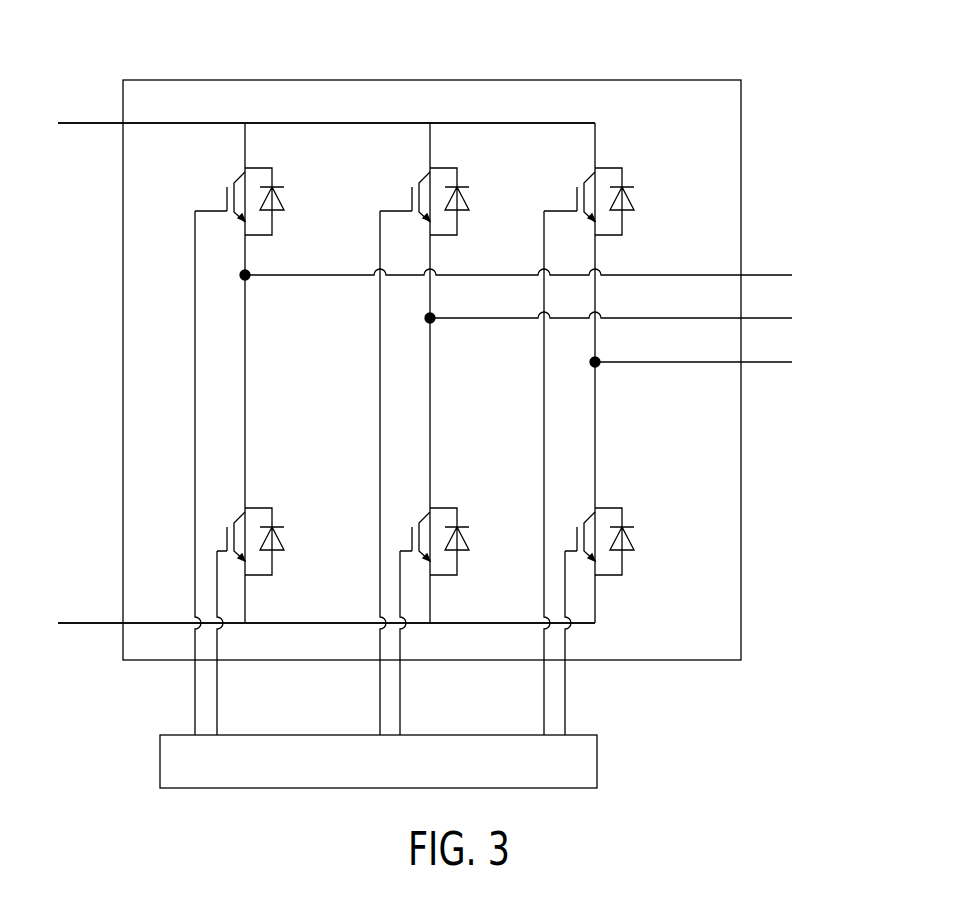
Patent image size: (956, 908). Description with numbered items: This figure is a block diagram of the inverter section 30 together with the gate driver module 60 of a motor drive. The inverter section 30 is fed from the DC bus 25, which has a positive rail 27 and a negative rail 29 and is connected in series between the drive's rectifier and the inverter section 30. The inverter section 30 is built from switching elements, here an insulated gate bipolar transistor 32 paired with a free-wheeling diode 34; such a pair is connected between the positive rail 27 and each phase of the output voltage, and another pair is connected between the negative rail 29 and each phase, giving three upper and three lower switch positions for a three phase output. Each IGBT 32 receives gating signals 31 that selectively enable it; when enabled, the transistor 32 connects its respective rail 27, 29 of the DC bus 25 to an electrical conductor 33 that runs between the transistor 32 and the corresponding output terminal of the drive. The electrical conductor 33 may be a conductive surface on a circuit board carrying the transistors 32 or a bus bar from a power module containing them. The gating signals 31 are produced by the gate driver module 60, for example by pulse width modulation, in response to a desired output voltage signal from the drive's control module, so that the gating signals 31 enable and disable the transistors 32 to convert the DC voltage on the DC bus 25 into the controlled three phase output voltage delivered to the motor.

The DC bus 25 is at (105, 135).
The positive rail 27 is at (90, 122).
The negative rail 29 is at (85, 626).
The inverter section 30 is at (432, 80).
The gating signals 31 is at (217, 702).
The insulated gate bipolar transistor 32 is at (222, 201).
The electrical conductor 33 is at (768, 262).
The free-wheeling diode 34 is at (284, 193).
The gate driver module 60 is at (266, 788).